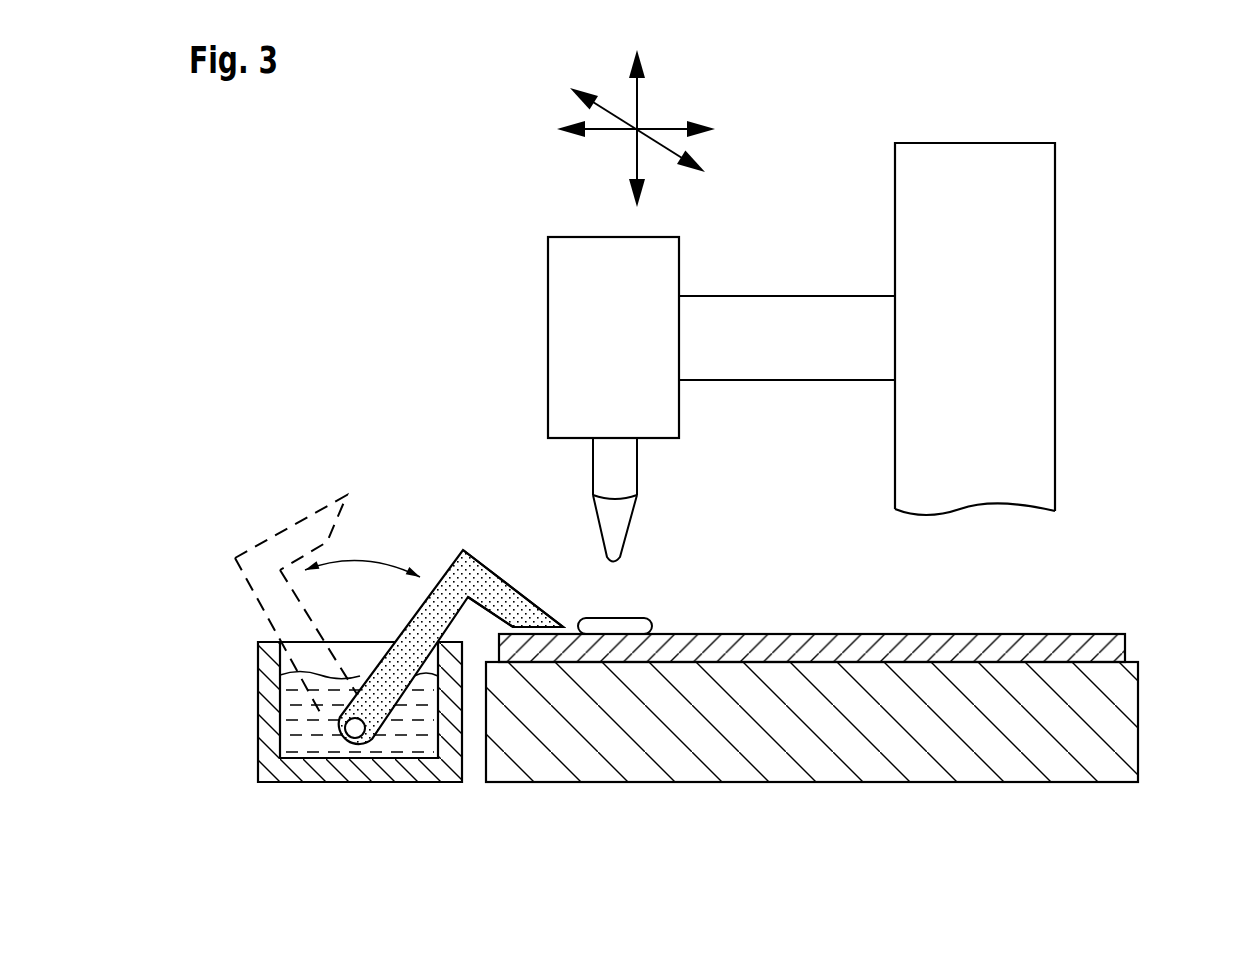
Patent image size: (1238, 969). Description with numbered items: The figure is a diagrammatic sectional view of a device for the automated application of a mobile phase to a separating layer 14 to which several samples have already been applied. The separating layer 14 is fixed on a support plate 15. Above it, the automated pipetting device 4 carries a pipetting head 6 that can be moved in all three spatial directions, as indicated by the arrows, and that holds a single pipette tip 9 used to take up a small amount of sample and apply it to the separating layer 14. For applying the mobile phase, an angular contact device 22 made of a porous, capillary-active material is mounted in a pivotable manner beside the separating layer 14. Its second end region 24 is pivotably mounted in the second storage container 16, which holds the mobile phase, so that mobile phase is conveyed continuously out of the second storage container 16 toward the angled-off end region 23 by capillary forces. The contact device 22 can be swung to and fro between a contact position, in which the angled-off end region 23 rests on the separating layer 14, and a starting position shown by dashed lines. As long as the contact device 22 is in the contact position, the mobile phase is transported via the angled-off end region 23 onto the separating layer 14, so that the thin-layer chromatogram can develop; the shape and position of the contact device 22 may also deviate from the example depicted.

The pipetting device 4 is at (1060, 130).
The pipetting head 6 is at (565, 309).
The pipette tip 9 is at (617, 482).
The separating layer 14 is at (1112, 648).
The support plate 15 is at (1112, 723).
The second storage container 16 is at (268, 757).
The contact device 22 is at (418, 643).
The angled-off end region 23 is at (497, 598).
The second end region 24 is at (368, 707).